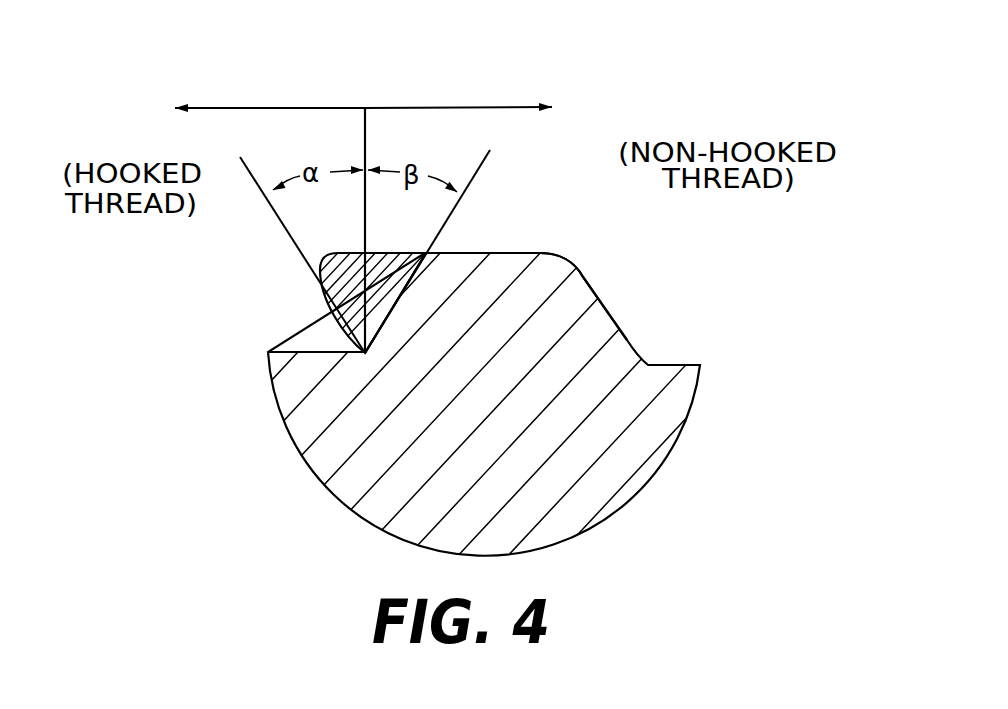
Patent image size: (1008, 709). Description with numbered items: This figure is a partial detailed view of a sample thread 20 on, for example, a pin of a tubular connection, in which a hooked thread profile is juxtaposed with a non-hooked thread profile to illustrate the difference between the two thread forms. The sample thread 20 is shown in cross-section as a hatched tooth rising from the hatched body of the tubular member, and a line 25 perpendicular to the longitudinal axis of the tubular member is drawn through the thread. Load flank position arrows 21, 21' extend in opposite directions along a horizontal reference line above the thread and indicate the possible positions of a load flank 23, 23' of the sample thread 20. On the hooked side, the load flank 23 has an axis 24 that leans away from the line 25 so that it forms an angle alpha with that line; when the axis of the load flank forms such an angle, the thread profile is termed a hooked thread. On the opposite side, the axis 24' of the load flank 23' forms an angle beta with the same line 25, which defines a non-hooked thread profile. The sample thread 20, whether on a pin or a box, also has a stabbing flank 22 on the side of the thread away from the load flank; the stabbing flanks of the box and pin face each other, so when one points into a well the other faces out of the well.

The sample thread 20 is at (432, 395).
The load flank position arrow 21 is at (270, 60).
The load flank position arrow 21' is at (479, 63).
The stabbing flank 22 is at (597, 283).
The load flank 23 is at (305, 301).
The load flank 23' is at (451, 282).
The axis of the load flank 24 is at (283, 255).
The axis of the load flank 24' is at (486, 235).
The line perpendicular to the tubular member longitudinal axis 25 is at (364, 127).